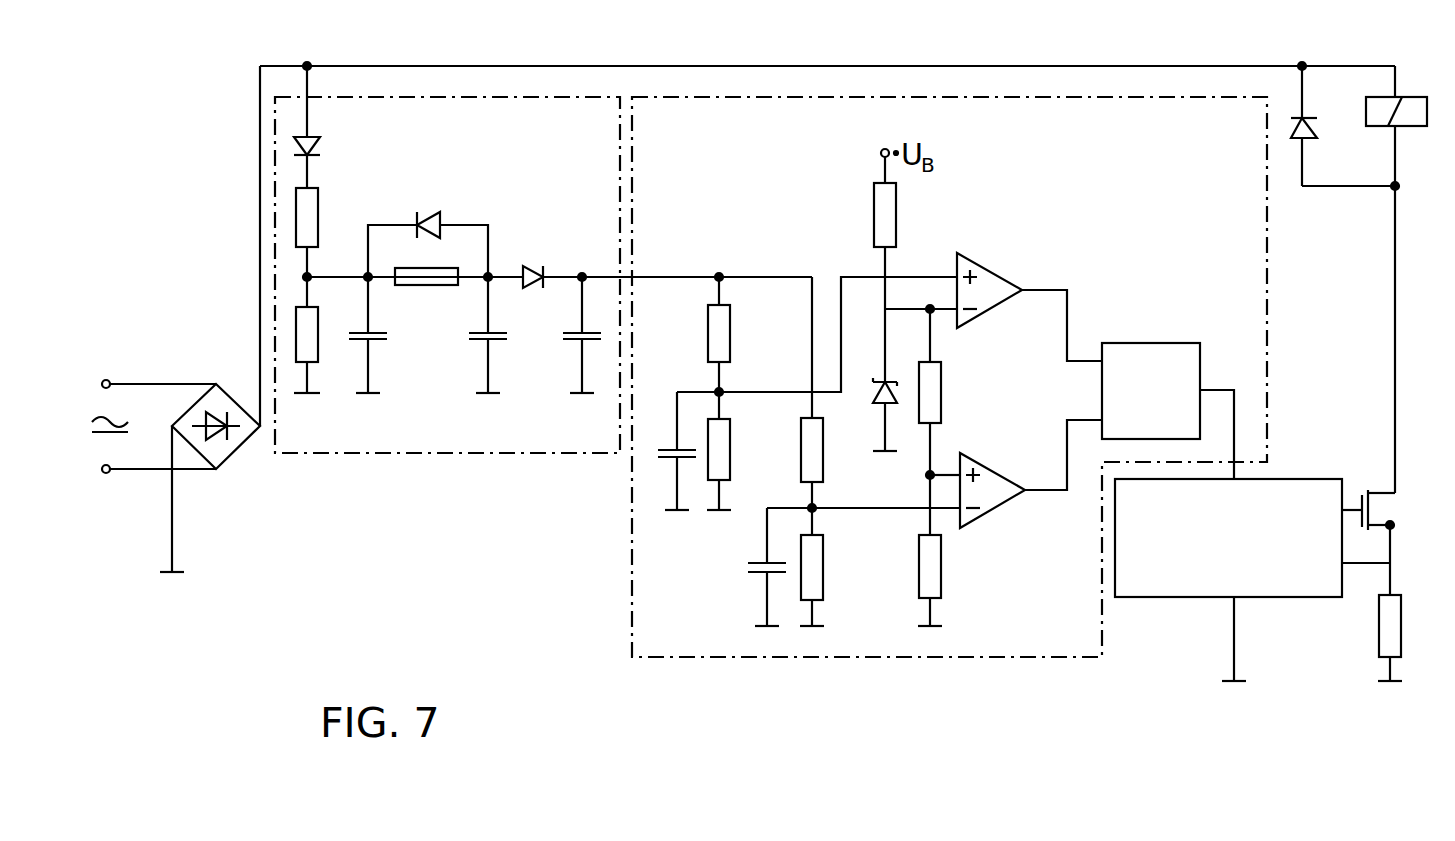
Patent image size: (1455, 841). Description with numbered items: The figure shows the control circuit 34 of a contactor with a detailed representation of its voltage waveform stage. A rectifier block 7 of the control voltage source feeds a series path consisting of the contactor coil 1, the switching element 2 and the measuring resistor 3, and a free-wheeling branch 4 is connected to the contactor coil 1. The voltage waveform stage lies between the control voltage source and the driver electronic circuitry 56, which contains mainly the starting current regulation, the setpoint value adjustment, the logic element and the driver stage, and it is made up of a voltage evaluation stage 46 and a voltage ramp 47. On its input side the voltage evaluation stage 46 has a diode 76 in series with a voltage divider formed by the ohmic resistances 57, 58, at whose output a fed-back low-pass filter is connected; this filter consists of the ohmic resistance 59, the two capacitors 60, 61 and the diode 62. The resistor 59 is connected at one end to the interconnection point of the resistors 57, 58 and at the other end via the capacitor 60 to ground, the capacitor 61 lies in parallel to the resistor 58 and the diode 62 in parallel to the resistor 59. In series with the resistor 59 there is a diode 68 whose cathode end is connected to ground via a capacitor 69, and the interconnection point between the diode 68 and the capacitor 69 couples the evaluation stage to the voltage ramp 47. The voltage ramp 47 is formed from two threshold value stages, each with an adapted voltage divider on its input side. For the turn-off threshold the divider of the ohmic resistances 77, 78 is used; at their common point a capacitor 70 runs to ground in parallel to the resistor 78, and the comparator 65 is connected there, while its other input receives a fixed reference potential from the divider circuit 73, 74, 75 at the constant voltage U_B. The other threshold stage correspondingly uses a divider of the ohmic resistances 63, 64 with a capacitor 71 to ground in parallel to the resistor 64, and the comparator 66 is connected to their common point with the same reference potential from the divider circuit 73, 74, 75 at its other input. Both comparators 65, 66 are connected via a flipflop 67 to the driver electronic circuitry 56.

The contactor coil 1 is at (1410, 126).
The switching element 2 is at (1367, 493).
The measuring resistor 3 is at (1379, 622).
The free-wheeling branch 4 is at (1317, 128).
The rectifier block 7 is at (236, 458).
The control circuit 34 is at (716, 66).
The voltage evaluation stage 46 is at (484, 453).
The voltage ramp 47 is at (873, 657).
The driver electronic circuitry 56 is at (1218, 597).
The ohmic resistance 57 is at (318, 232).
The ohmic resistance 58 is at (318, 350).
The ohmic resistance 59 is at (420, 286).
The capacitor 60 is at (505, 338).
The capacitor 61 is at (385, 337).
The diode 62 is at (427, 222).
The ohmic resistance 63 is at (823, 440).
The ohmic resistance 64 is at (823, 580).
The comparator 65 is at (995, 272).
The comparator 66 is at (1000, 478).
The flipflop 67 is at (1155, 343).
The diode 68 is at (530, 270).
The capacitor 69 is at (565, 338).
The capacitor 70 is at (665, 450).
The capacitor 71 is at (760, 575).
The divider circuit resistor 73 is at (942, 413).
The divider circuit resistor 74 is at (942, 562).
The divider circuit resistor 75 is at (895, 228).
The diode 76 is at (312, 147).
The ohmic resistance 77 is at (730, 347).
The ohmic resistance 78 is at (730, 430).